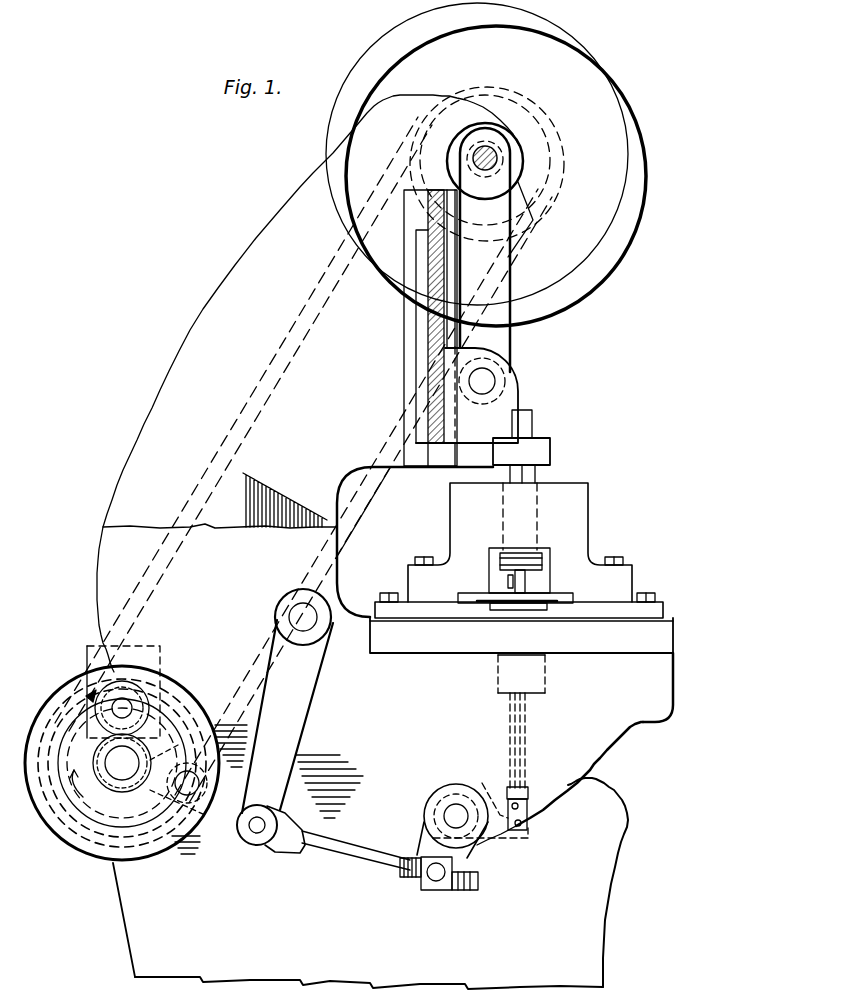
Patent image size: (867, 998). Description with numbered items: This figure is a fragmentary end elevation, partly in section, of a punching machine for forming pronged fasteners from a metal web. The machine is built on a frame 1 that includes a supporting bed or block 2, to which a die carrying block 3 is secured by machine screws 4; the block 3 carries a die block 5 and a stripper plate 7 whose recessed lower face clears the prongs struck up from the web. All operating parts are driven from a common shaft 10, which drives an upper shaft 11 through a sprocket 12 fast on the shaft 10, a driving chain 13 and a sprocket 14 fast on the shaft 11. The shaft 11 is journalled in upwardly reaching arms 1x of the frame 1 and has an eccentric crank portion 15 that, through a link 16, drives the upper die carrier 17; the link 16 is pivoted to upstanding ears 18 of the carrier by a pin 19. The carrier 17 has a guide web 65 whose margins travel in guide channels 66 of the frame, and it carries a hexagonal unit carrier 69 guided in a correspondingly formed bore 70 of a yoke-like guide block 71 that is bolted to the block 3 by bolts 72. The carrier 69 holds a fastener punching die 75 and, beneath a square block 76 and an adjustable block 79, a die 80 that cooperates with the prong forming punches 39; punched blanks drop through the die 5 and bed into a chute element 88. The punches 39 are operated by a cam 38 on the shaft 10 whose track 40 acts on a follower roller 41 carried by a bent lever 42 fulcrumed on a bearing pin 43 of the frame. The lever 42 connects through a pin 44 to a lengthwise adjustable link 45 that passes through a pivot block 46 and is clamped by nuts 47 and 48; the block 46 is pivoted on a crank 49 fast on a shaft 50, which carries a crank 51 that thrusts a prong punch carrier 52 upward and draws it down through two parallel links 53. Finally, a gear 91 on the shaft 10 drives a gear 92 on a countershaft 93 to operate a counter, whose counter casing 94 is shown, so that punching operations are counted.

The frame 1 is at (615, 803).
The supporting bed or block 2 is at (680, 636).
The die carrying block 3 is at (664, 612).
The machine screws 4 is at (388, 592).
The die block 5 is at (518, 611).
The stripper plate 7 is at (470, 596).
The common shaft 10 is at (115, 777).
The upper shaft 11 is at (500, 177).
The sprocket 12 is at (88, 696).
The driving chain 13 is at (152, 566).
The sprocket 14 is at (527, 225).
The eccentric crank portion 15 is at (478, 150).
The link 16 is at (510, 299).
The upper die carrier 17 is at (530, 452).
The upstanding ears 18 is at (518, 400).
The pin 19 is at (481, 393).
The cam 38 is at (185, 705).
The prong forming punches 39 is at (527, 730).
The track 40 is at (195, 755).
The follower roller 41 is at (200, 805).
The bent lever 42 is at (302, 692).
The bearing pin 43 is at (312, 622).
The pin 44 is at (257, 835).
The lengthwise adjustable link 45 is at (332, 853).
The pivot block 46 is at (434, 891).
The nut 47 is at (406, 878).
The nut 48 is at (458, 891).
The crank 49 is at (427, 832).
The shaft 50 is at (455, 804).
The crank 51 is at (498, 810).
The prong punch carrier 52 is at (527, 795).
The parallel links 53 is at (530, 818).
The guide web 65 is at (432, 318).
The guide channels 66 is at (427, 228).
The unit carrier 69 is at (540, 476).
The bore 70 is at (503, 515).
The yoke-like guide block 71 is at (588, 499).
The bolts 72 is at (424, 556).
The fastener punching die 75 is at (526, 584).
The square block 76 is at (545, 553).
The block 79 is at (542, 561).
The die 80 is at (508, 580).
The chute element 88 is at (500, 672).
The gear 91 is at (128, 781).
The gear 92 is at (130, 682).
The countershaft 93 is at (128, 714).
The counter casing 94 is at (145, 650).
The upwardly reaching arms 1x is at (103, 527).